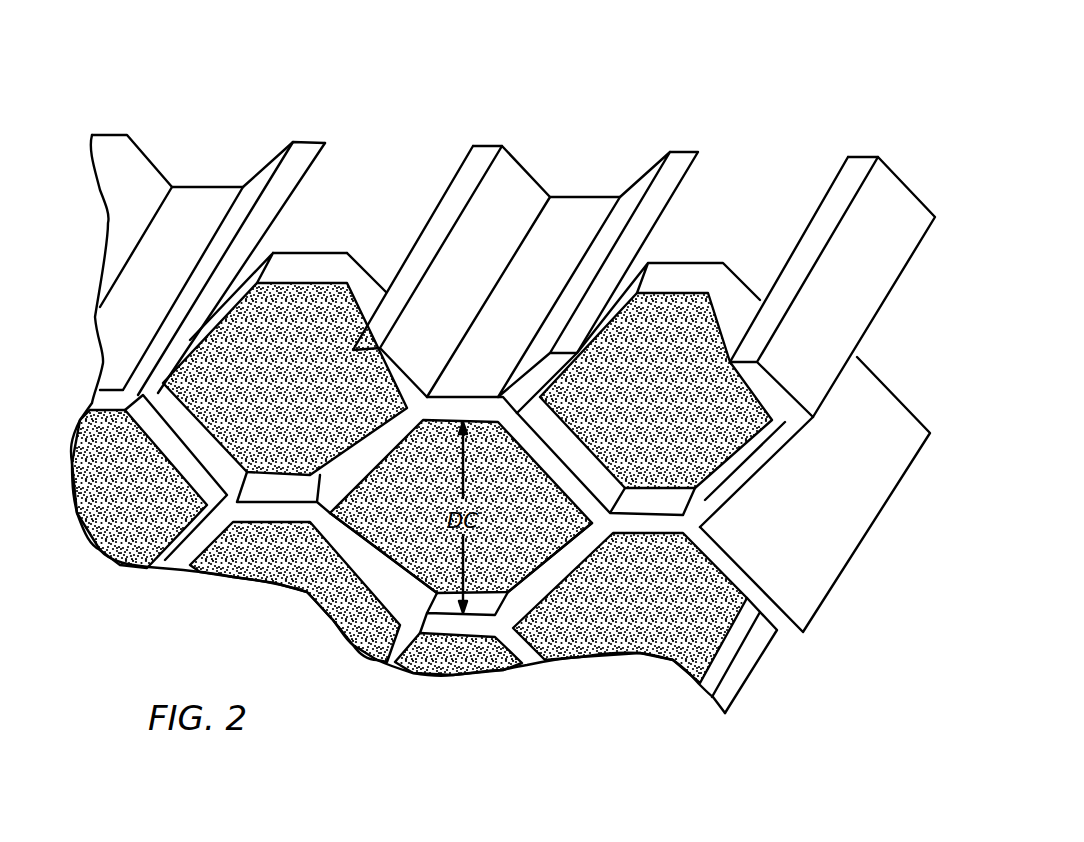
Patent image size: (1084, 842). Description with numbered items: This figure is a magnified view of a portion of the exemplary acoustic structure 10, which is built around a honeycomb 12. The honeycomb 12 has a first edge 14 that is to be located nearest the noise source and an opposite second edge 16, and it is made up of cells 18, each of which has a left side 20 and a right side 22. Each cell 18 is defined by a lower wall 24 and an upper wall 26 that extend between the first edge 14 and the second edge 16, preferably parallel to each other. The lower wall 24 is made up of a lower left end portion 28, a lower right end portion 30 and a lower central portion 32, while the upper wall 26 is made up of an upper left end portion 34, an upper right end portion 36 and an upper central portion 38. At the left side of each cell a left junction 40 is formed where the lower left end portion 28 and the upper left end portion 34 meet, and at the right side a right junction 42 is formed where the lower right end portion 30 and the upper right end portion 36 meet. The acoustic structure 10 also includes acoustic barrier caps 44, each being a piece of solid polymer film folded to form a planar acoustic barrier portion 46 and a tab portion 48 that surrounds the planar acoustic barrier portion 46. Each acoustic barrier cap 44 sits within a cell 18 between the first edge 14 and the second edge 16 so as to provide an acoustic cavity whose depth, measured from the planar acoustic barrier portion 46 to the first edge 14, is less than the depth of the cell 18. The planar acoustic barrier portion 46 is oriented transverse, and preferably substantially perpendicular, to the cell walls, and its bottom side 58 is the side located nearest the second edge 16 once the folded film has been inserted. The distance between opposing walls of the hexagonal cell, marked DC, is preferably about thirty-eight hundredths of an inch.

The acoustic structure 10 is at (746, 69).
The honeycomb 12 is at (817, 520).
The first edge 14 is at (907, 185).
The second edge 16 is at (153, 370).
The cell 18 is at (733, 207).
The left side 20 is at (517, 413).
The right side 22 is at (780, 420).
The lower wall 24 is at (353, 527).
The upper wall 26 is at (395, 455).
The lower left end portion 28 is at (500, 183).
The lower right end portion 30 is at (633, 197).
The lower central portion 32 is at (570, 220).
The upper left end portion 34 is at (540, 590).
The upper right end portion 36 is at (762, 610).
The upper central portion 38 is at (647, 533).
The left junction 40 is at (147, 395).
The right junction 42 is at (407, 410).
The acoustic barrier cap 44 is at (715, 343).
The planar acoustic barrier portion 46 is at (345, 333).
The tab portion 48 is at (307, 268).
The bottom side 58 is at (290, 550).